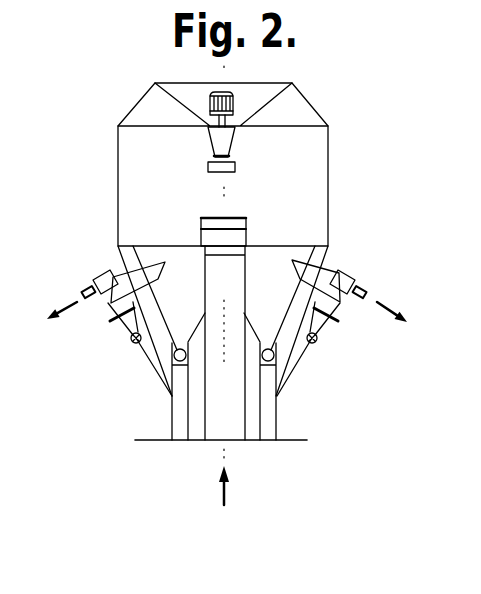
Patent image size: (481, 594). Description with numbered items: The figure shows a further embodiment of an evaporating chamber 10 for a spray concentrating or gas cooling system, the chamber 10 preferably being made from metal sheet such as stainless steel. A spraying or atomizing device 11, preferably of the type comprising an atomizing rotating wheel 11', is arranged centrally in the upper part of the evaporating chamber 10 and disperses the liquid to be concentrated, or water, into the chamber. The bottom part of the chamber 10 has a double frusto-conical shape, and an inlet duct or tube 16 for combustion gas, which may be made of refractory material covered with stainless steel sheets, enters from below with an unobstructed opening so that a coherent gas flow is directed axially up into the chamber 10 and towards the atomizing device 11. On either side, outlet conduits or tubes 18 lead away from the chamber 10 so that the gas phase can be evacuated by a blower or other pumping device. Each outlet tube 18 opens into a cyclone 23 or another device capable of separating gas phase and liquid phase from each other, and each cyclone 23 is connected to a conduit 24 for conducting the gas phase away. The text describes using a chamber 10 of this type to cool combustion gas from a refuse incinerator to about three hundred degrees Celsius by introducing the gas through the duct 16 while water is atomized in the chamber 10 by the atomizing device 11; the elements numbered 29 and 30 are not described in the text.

The evaporating chamber 10 is at (320, 183).
The spraying or atomizing device 11 is at (297, 125).
The atomizing rotating wheel 11' is at (146, 168).
The inlet duct or tube 16 is at (230, 398).
The outlet conduit or tube 18 is at (320, 268).
The cyclone 23 is at (328, 317).
The conduit 24 is at (347, 283).
The discharge chute 29 is at (168, 356).
The pivot 30 is at (318, 343).